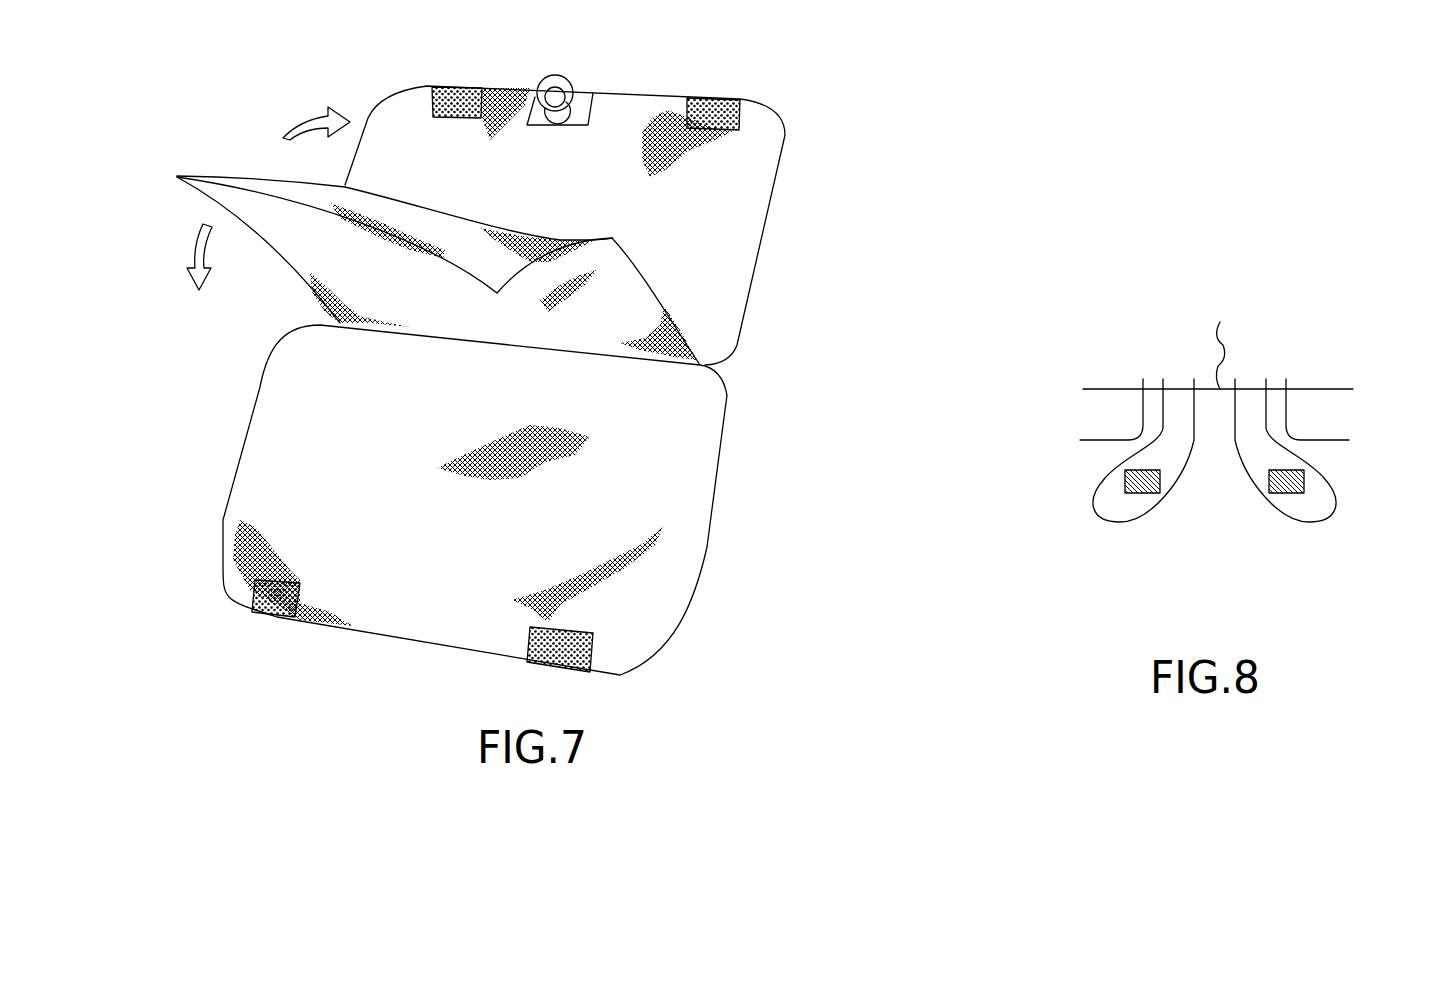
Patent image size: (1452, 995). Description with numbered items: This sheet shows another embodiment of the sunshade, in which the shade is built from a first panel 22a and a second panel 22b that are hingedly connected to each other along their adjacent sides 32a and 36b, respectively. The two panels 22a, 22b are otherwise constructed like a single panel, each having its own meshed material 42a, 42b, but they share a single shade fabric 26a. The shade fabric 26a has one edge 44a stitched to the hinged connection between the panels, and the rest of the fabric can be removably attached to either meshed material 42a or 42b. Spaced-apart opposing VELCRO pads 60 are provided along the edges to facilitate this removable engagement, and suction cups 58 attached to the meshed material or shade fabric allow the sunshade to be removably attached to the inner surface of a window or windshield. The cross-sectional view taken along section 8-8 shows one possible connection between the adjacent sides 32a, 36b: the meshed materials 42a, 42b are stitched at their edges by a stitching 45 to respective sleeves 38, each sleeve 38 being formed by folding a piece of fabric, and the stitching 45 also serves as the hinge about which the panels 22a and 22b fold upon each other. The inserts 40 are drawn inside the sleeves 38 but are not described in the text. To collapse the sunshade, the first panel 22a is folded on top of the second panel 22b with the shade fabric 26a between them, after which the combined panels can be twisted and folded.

In FIG. 7, the first panel 22a is at (803, 166).
In FIG. 8, the first panel 22a is at (1093, 422).
In FIG. 7, the second panel 22b is at (728, 478).
In FIG. 8, the second panel 22b is at (1343, 410).
In FIG. 7, the shade fabric 26a is at (263, 193).
In FIG. 8, the shade fabric 26a is at (1215, 348).
In FIG. 7, the side 32a is at (440, 335).
In FIG. 7, the side 36b is at (580, 352).
In FIG. 7, the meshed material 42a is at (660, 95).
In FIG. 7, the meshed material 42b is at (423, 623).
In FIG. 7, the edge 44a is at (453, 338).
In FIG. 7, the suction cups 58 is at (558, 82).
In FIG. 7, the VELCRO pads 60 is at (467, 86).
In FIG. 7, the section 8- 8 is at (393, 257).
In FIG. 8, the stitching 45 is at (1310, 388).
In FIG. 8, the sleeves 38 is at (1097, 513).
In FIG. 8, the stiffener insert 40 is at (1140, 495).